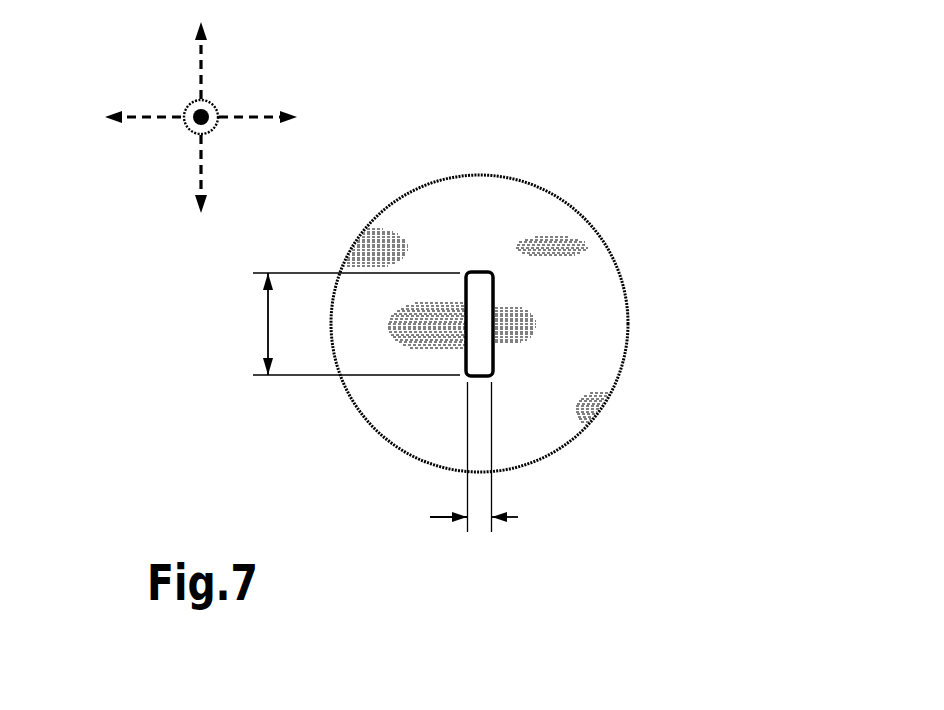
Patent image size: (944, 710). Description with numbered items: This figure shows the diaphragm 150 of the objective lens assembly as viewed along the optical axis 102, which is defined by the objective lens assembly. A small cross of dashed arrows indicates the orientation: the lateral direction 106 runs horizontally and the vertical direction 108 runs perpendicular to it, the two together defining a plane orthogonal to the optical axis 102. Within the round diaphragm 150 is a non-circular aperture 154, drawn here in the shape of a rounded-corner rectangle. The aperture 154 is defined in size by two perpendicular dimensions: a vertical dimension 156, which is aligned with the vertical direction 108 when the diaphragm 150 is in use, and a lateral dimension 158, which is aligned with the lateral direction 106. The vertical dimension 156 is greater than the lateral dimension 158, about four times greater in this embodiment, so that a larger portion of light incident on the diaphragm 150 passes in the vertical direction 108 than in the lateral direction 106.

The optical axis 102 is at (208, 112).
The lateral direction 106 is at (148, 113).
The vertical direction 108 is at (202, 72).
The diaphragm 150 is at (543, 210).
The aperture 154 is at (484, 351).
The vertical dimension 156 is at (353, 324).
The lateral dimension 158 is at (479, 528).